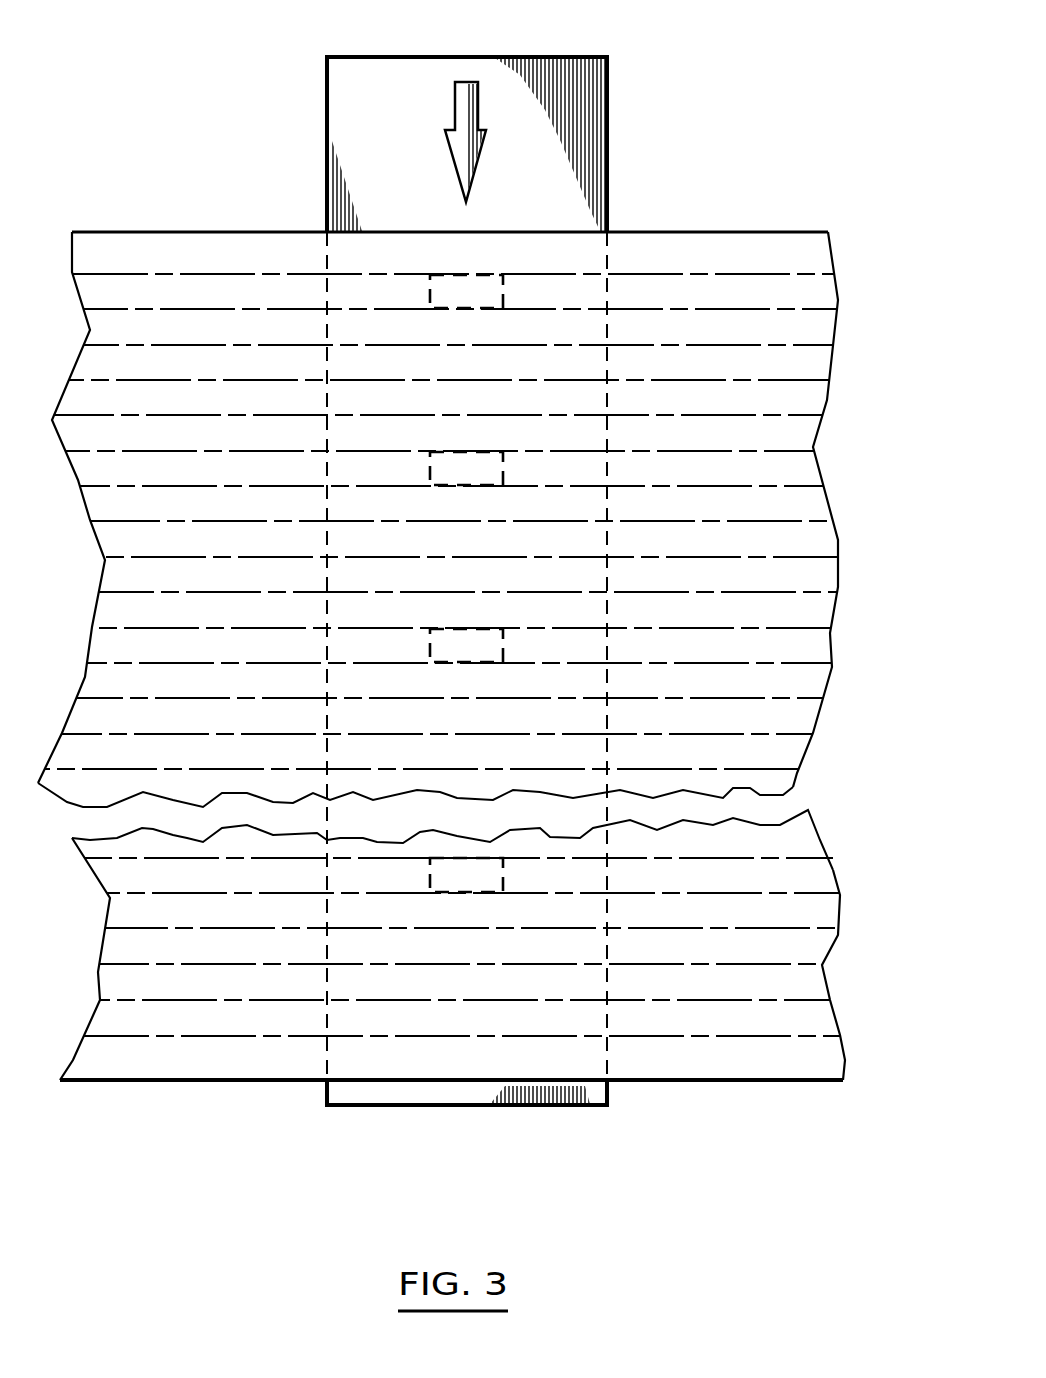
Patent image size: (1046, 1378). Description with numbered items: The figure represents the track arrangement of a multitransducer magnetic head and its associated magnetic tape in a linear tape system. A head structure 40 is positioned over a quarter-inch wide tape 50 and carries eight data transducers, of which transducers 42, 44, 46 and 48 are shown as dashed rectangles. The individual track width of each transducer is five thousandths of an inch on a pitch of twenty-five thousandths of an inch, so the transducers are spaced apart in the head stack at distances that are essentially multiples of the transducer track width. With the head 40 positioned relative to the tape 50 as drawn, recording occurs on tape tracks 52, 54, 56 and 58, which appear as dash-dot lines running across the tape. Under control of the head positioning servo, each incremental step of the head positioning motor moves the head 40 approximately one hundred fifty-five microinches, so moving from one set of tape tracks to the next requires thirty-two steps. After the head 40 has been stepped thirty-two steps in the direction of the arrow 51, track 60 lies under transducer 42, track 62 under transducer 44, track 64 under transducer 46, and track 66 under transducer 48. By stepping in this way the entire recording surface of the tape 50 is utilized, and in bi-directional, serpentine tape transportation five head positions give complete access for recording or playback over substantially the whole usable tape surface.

The head structure 40 is at (607, 167).
The arrow 51 is at (452, 130).
The tape 50 is at (745, 232).
The tape track 52 is at (803, 290).
The tape track 60 is at (805, 328).
The tape track 54 is at (802, 468).
The tape track 62 is at (803, 505).
The tape track 56 is at (800, 648).
The tape track 64 is at (802, 683).
The tape track 58 is at (808, 878).
The tape track 66 is at (810, 912).
The data transducer 42 is at (432, 278).
The data transducer 44 is at (432, 455).
The data transducer 46 is at (432, 633).
The data transducer 48 is at (430, 868).